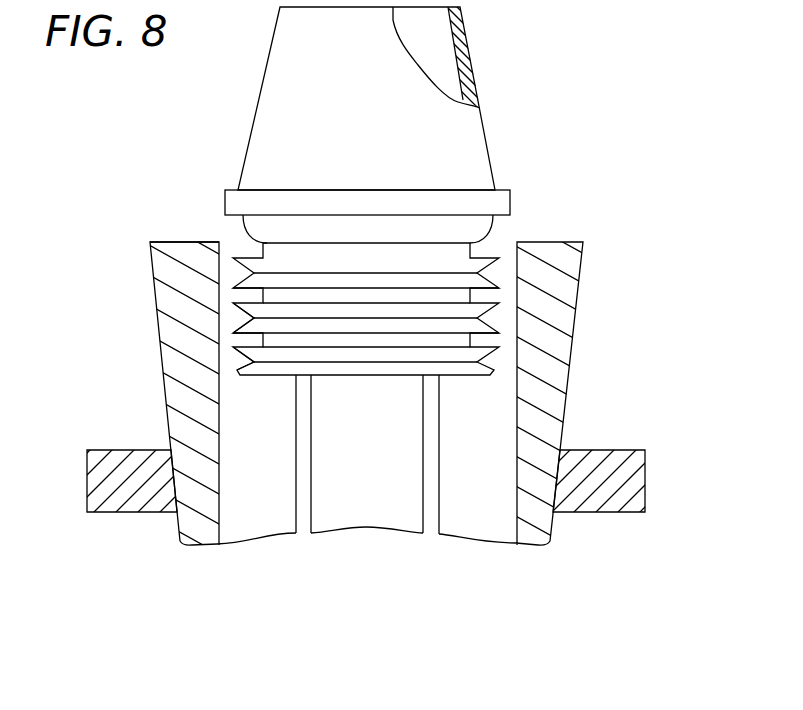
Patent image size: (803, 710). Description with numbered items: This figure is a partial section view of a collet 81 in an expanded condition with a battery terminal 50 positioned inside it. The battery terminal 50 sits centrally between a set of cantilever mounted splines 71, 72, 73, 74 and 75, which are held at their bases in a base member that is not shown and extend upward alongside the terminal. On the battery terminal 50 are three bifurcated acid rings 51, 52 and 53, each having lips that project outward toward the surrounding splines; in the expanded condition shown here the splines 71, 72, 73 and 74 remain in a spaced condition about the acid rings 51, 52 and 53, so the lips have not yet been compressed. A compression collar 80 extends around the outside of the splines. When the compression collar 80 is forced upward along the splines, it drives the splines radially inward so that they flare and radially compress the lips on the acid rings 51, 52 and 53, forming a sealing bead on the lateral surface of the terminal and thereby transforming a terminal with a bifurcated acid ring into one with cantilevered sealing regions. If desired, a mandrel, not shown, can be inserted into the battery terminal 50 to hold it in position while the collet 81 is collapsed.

The battery terminal 50 is at (458, 140).
The acid ring 51 is at (475, 263).
The acid ring 52 is at (475, 308).
The acid ring 53 is at (475, 353).
The spline 71 is at (200, 522).
The spline 72 is at (257, 513).
The spline 73 is at (350, 503).
The spline 74 is at (472, 515).
The spline 75 is at (532, 517).
The compression collar 80 is at (595, 500).
The collet 81 is at (142, 196).